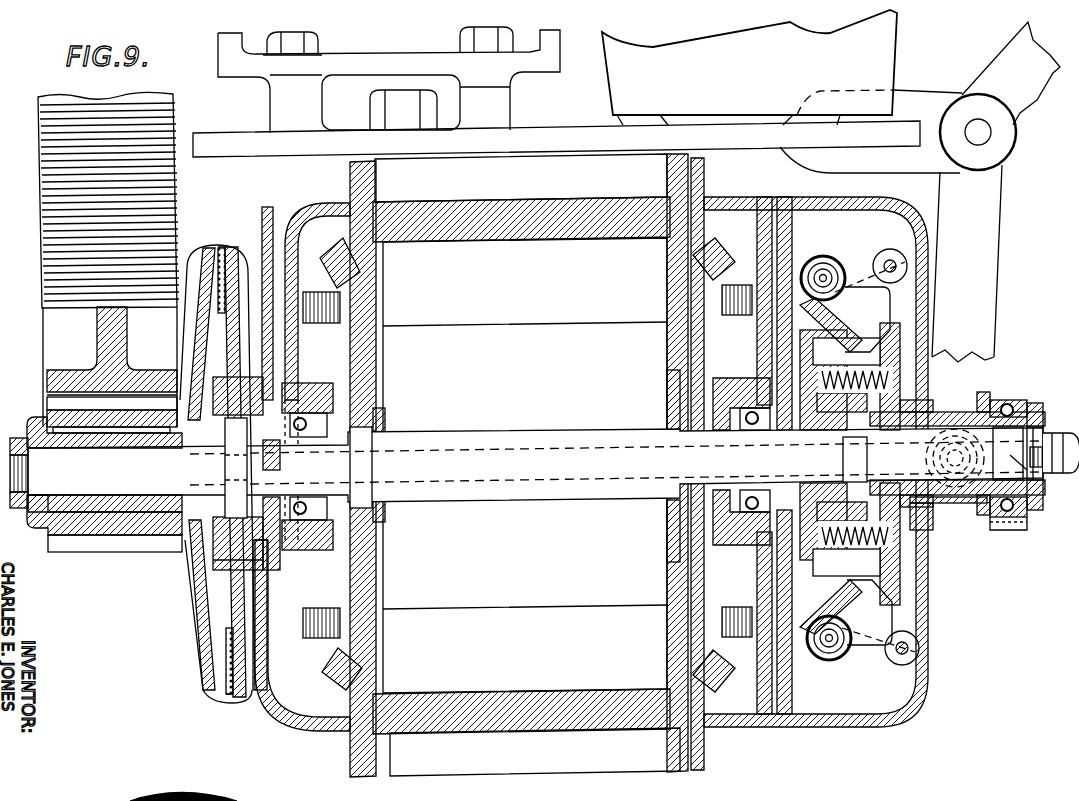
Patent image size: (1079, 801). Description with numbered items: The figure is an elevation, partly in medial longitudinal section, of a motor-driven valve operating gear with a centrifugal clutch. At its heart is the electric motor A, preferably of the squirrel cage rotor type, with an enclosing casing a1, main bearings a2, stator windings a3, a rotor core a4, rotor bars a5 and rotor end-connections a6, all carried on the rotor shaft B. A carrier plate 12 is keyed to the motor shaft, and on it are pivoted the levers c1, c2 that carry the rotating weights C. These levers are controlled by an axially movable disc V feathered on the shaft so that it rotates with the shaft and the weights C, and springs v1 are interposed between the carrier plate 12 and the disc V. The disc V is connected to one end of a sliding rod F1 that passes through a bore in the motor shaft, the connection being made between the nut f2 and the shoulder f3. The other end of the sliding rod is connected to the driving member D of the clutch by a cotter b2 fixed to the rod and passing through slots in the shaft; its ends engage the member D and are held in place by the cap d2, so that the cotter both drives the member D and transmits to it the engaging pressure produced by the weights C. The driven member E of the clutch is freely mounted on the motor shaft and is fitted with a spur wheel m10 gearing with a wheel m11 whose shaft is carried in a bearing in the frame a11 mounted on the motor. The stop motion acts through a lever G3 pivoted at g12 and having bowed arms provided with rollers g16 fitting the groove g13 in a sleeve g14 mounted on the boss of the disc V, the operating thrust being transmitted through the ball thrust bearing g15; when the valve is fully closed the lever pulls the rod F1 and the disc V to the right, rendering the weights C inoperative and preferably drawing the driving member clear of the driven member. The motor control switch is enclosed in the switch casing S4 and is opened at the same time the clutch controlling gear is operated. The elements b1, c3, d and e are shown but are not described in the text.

The electric motor A is at (343, 207).
The enclosing casing a1 is at (532, 207).
The main bearings a2 is at (338, 552).
The stator windings a3 is at (366, 260).
The rotor core a4 is at (525, 465).
The rotor bars a5 is at (372, 336).
The rotor end-connections a6 is at (352, 343).
The frame a11 is at (242, 70).
The rotor shaft B is at (546, 471).
The nut b1 is at (22, 512).
The cotter b2 is at (226, 447).
The rotating weights C is at (818, 262).
The lever c1 is at (848, 285).
The lever c2 is at (903, 307).
The pivot c3 is at (889, 258).
The driving member of the clutch D is at (248, 262).
The friction ring d is at (222, 248).
The cap d2 is at (213, 547).
The driven member of the clutch E is at (196, 262).
The friction lining e is at (214, 248).
The sliding rod F1 is at (578, 447).
The lever G3 is at (920, 187).
The pivot g12 is at (975, 132).
The groove g13 is at (933, 517).
The sleeve g14 is at (980, 402).
The ball thrust bearing g15 is at (1008, 530).
The rollers g16 is at (954, 440).
The nut f2 is at (1045, 478).
The shoulder f3 is at (1040, 432).
The spur wheel m10 is at (45, 378).
The wheel m11 is at (68, 148).
The switch casing S4 is at (880, 56).
The disc V is at (900, 400).
The springs v1 is at (863, 368).
The carrier plate 12 is at (833, 330).